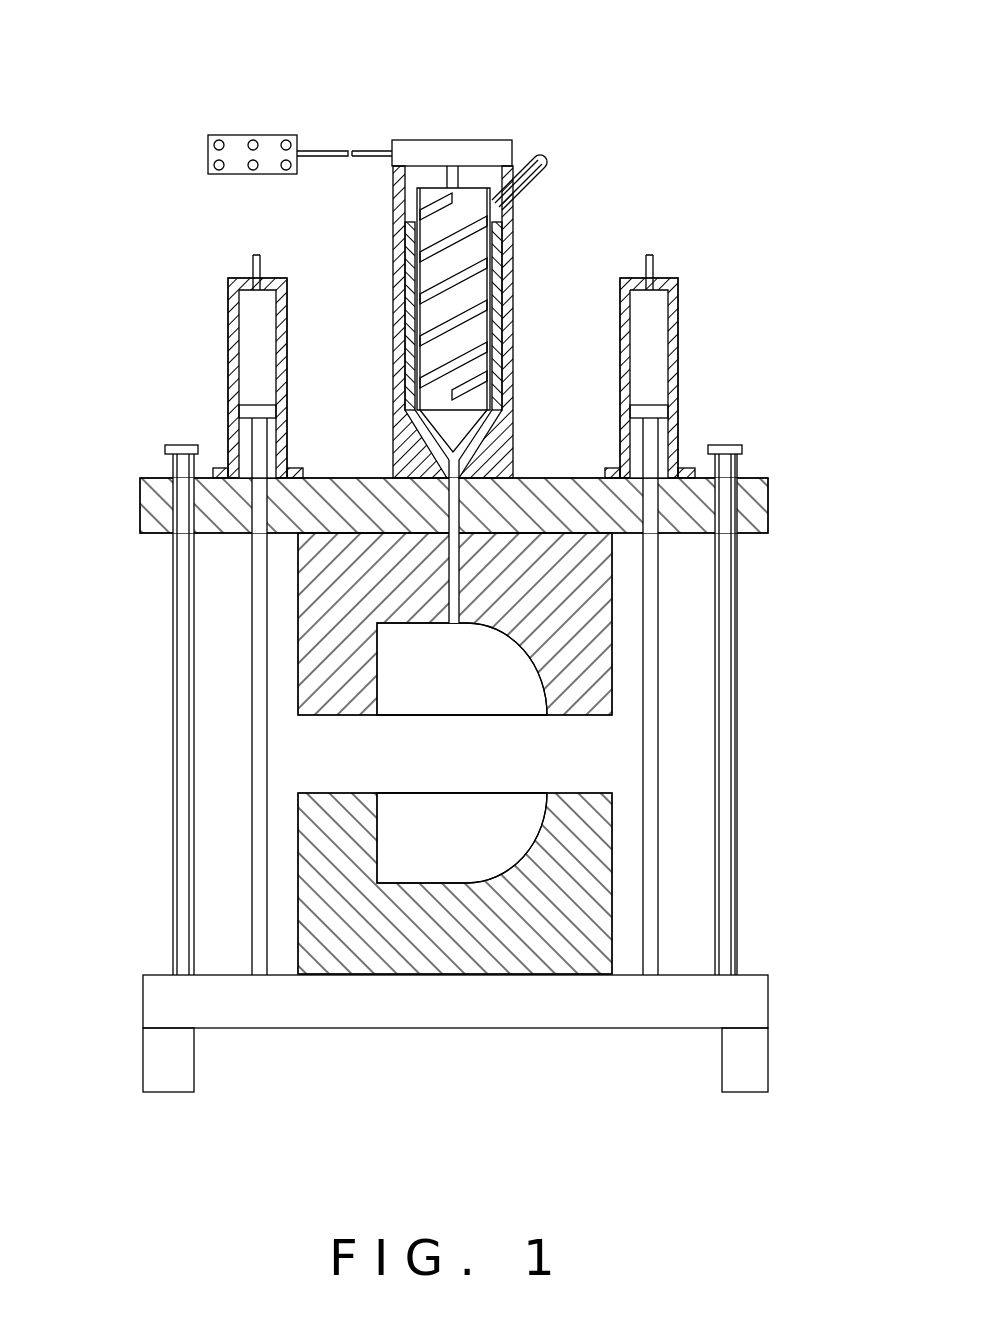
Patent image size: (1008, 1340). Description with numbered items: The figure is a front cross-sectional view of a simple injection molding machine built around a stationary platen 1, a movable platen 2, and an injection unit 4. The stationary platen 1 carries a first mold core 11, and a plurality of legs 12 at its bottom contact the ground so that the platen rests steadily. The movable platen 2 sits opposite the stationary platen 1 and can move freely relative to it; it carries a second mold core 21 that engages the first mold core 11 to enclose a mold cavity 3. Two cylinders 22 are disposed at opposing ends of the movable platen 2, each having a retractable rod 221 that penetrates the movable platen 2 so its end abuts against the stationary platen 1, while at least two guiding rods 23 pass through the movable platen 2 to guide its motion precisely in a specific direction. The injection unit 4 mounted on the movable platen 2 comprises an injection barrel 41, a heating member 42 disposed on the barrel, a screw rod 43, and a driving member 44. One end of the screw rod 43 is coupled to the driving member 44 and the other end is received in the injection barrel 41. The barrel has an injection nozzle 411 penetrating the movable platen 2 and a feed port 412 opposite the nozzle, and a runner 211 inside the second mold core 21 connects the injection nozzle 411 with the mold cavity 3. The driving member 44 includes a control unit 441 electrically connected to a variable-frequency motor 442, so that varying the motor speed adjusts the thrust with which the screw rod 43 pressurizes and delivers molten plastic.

The stationary platen 1 is at (770, 1000).
The legs 12 is at (760, 1058).
The movable platen 2 is at (768, 490).
The second mold core 21 is at (612, 598).
The runner 211 is at (448, 554).
The cylinders 22 is at (228, 321).
The retractable rod 221 is at (252, 610).
The guiding rods 23 is at (738, 697).
The mold cavity 3 is at (397, 827).
The first mold core 11 is at (612, 866).
The injection unit 4 is at (538, 109).
The injection barrel 41 is at (392, 196).
The injection nozzle 411 is at (395, 453).
The feed port 412 is at (522, 176).
The heating member 42 is at (393, 238).
The screw rod 43 is at (512, 232).
The driving member 44 is at (360, 89).
The control unit 441 is at (254, 133).
The variable-frequency motor 442 is at (436, 140).